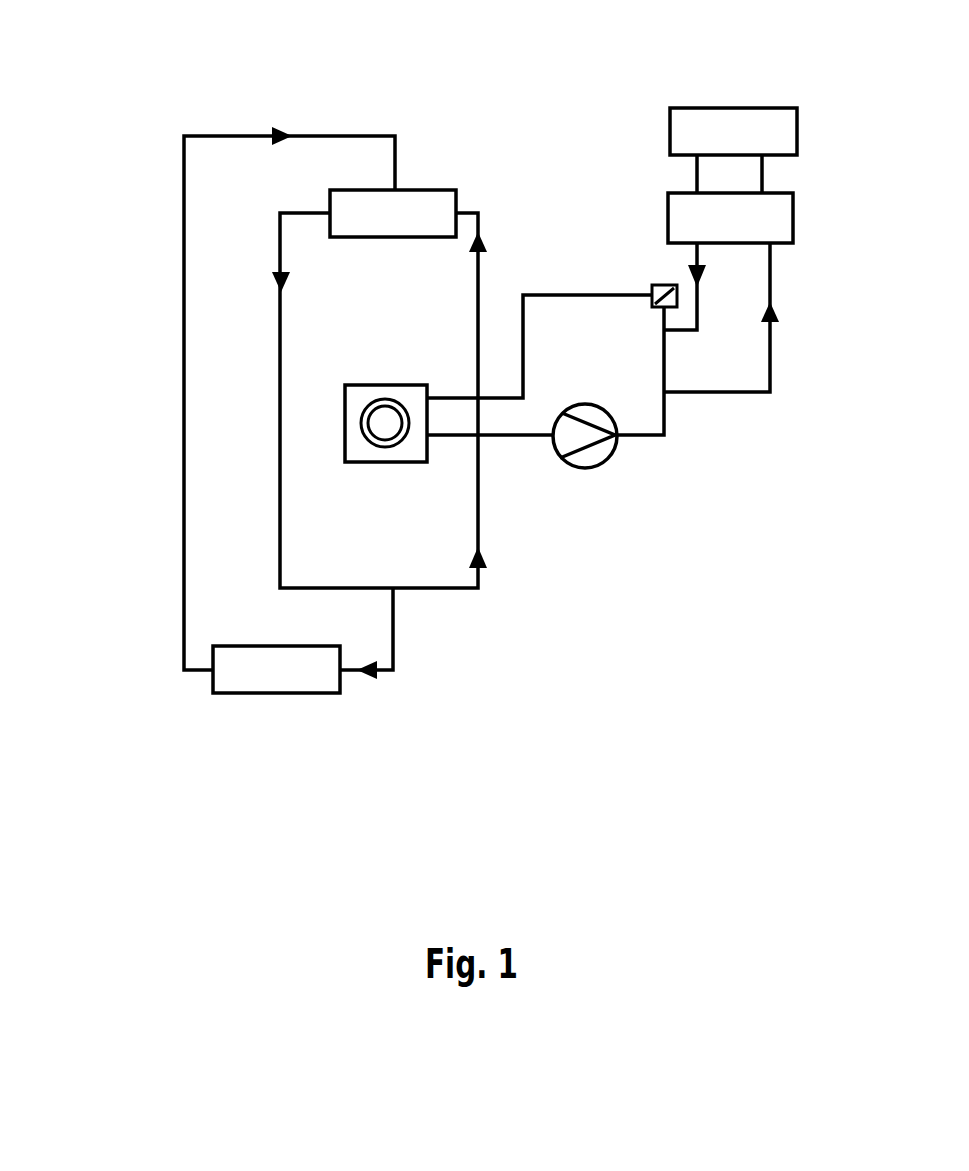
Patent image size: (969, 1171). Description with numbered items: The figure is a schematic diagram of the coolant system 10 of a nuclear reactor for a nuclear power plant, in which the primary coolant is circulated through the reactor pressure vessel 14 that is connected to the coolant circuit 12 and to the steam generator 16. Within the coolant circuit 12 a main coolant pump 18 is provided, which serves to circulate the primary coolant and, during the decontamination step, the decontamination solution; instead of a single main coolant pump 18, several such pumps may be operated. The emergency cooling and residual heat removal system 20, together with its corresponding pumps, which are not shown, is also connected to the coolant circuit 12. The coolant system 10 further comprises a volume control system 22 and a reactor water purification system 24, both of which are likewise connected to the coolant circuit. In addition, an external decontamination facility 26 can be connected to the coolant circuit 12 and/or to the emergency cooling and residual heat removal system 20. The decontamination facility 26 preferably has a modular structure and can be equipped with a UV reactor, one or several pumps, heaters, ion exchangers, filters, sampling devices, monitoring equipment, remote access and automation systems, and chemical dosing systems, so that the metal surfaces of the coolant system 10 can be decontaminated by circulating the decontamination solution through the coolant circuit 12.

The coolant system 10 is at (150, 88).
The coolant circuit 12 is at (604, 294).
The reactor pressure vessel 14 is at (384, 384).
The steam generator 16 is at (677, 297).
The main coolant pump 18 is at (611, 456).
The emergency cooling and residual heat removal system 20 is at (435, 203).
The volume control system 22 is at (793, 218).
The reactor water purification system 24 is at (797, 128).
The external decontamination facility 26 is at (340, 687).